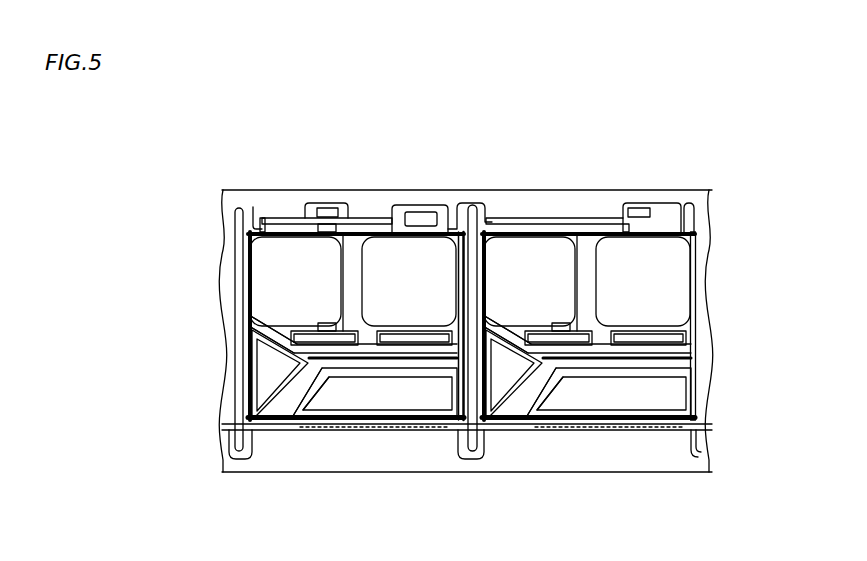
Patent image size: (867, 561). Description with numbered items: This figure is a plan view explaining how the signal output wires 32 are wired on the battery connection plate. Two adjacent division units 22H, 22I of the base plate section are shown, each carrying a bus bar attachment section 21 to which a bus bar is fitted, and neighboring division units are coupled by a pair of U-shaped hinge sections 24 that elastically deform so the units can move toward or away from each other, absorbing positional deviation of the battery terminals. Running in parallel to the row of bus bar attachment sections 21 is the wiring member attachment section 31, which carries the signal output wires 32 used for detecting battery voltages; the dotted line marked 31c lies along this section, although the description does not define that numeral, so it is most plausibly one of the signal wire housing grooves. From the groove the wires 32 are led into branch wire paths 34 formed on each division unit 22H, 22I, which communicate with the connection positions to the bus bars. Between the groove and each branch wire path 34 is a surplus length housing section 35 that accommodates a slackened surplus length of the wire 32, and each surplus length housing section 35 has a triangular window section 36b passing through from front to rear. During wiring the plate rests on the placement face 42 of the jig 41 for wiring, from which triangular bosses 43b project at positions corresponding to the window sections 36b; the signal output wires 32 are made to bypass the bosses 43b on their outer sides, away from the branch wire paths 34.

The bus bar attachment section 21 is at (383, 247).
The division unit 22H is at (354, 216).
The division unit 22I is at (595, 215).
The hinge section 24 is at (466, 205).
The wiring member attachment section 31 is at (373, 450).
The contact surface 31c is at (340, 428).
The signal output wire 32 is at (373, 357).
The branch wire path 34 is at (327, 327).
The surplus length housing section 35 is at (302, 388).
The window section 36b is at (283, 388).
The jig for wiring 41 is at (573, 474).
The placement face 42 is at (615, 456).
The boss 43b is at (265, 371).